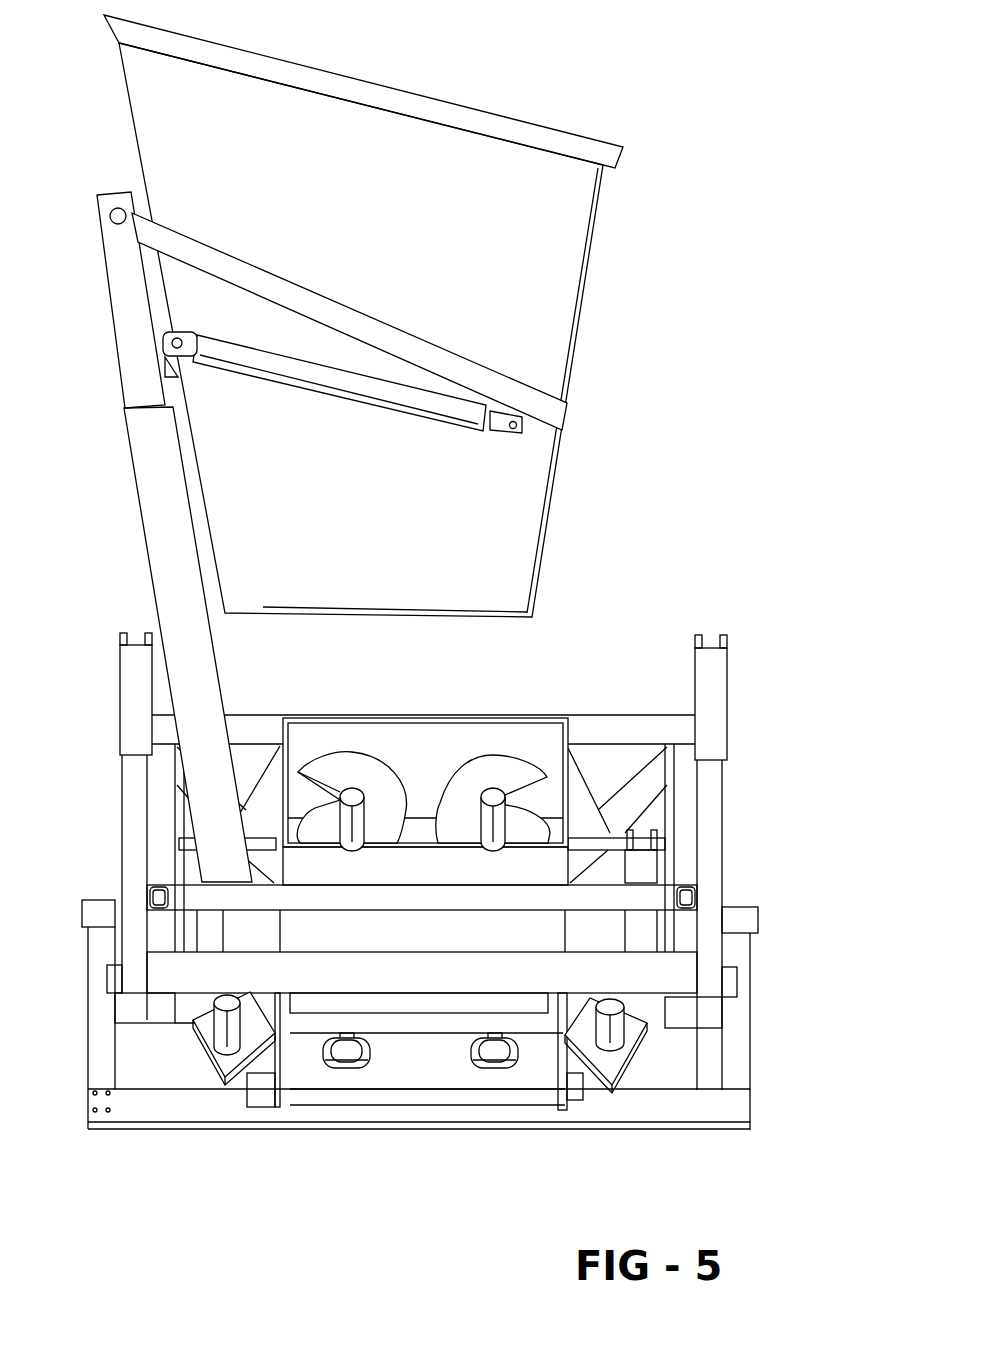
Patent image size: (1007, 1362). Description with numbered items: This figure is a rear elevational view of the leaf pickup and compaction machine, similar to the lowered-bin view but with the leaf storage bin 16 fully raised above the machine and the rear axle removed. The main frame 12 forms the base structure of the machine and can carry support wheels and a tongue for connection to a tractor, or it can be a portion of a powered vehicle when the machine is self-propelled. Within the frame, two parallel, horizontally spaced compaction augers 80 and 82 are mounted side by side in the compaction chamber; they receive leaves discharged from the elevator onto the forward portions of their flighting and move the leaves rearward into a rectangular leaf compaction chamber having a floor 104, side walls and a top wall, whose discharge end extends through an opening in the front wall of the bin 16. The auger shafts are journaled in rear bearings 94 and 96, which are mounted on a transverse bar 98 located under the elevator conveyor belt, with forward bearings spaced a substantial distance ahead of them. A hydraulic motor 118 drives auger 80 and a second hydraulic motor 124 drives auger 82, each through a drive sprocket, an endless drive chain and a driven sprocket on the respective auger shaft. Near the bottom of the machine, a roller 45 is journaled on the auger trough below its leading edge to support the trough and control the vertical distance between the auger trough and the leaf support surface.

The main frame 12 is at (123, 800).
The leaf storage bin 16 is at (565, 328).
The roller 45 is at (172, 1128).
The compaction auger 80 is at (340, 768).
The compaction auger 82 is at (511, 760).
The rear bearing 94 is at (333, 1065).
The rear bearing 96 is at (492, 1068).
The transverse bar 98 is at (378, 1080).
The floor 104 is at (418, 818).
The hydraulic motor 118 is at (193, 1020).
The hydraulic motor 124 is at (630, 1033).